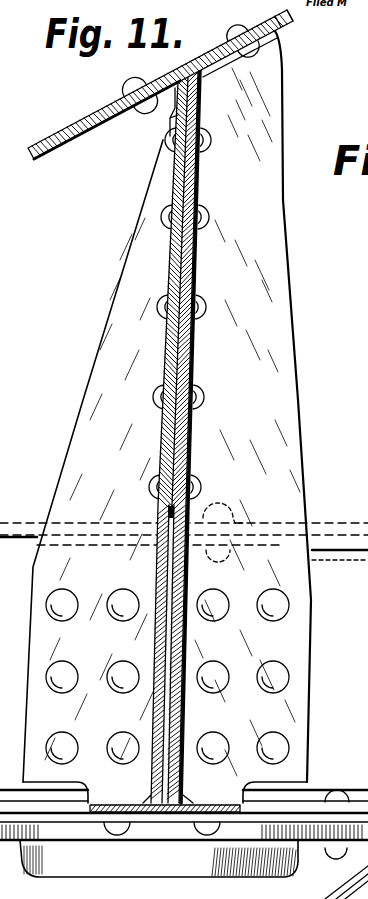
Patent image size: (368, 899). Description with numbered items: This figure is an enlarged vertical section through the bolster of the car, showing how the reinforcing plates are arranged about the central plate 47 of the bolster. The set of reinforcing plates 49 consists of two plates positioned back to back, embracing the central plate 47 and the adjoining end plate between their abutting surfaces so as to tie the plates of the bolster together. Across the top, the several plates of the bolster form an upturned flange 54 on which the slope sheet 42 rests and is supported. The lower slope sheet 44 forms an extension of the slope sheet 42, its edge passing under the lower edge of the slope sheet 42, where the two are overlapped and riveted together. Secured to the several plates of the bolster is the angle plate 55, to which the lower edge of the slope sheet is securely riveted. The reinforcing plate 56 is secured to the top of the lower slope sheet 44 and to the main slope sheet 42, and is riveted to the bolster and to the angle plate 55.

The slope sheet 42 is at (286, 15).
The upturned flange 54 is at (277, 42).
The reinforcing plate 56 is at (57, 126).
The lower slope sheet 44 is at (78, 148).
The angle plate 55 is at (167, 114).
The central plate 47 is at (182, 263).
The reinforcing plates 49 is at (165, 435).